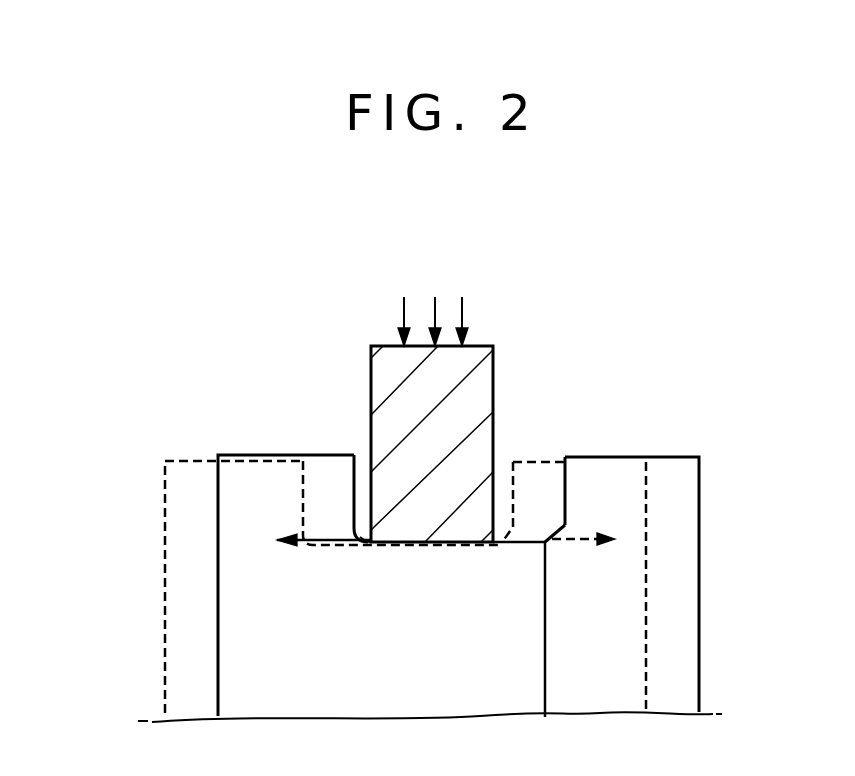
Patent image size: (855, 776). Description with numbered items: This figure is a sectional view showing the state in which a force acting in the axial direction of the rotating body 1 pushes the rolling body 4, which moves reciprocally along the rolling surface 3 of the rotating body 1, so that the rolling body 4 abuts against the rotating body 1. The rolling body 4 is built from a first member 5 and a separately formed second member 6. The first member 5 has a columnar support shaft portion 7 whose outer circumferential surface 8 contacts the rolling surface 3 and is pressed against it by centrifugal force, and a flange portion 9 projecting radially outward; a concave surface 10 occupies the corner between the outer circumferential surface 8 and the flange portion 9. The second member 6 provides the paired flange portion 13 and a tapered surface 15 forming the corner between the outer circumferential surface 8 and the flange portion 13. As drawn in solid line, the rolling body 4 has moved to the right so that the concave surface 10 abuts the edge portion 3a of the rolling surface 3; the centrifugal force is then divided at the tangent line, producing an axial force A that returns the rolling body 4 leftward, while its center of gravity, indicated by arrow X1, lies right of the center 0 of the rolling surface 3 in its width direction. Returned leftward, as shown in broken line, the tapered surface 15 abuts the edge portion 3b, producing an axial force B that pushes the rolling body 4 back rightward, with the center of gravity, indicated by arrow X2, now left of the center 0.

The center in width direction of rolling surface 0 is at (436, 300).
The rotating body 1 is at (486, 375).
The rolling surface 3 is at (433, 548).
The edge portion of rolling surface 3a is at (370, 537).
The edge portion of rolling surface 3b is at (498, 537).
The rolling body 4 is at (733, 441).
The first member 5 is at (85, 557).
The second member 6 is at (699, 623).
The support shaft portion 7 is at (395, 685).
The outer circumferential surface 8 is at (525, 540).
The flange portion 9 is at (250, 512).
The concave surface 10 is at (362, 538).
The flange portion 13 is at (672, 475).
The tapered surface 15 is at (556, 526).
The arrow indicating center of gravity position X1 is at (462, 307).
The arrow indicating center of gravity position X2 is at (404, 312).
The axial force A is at (297, 543).
The axial force B is at (573, 548).